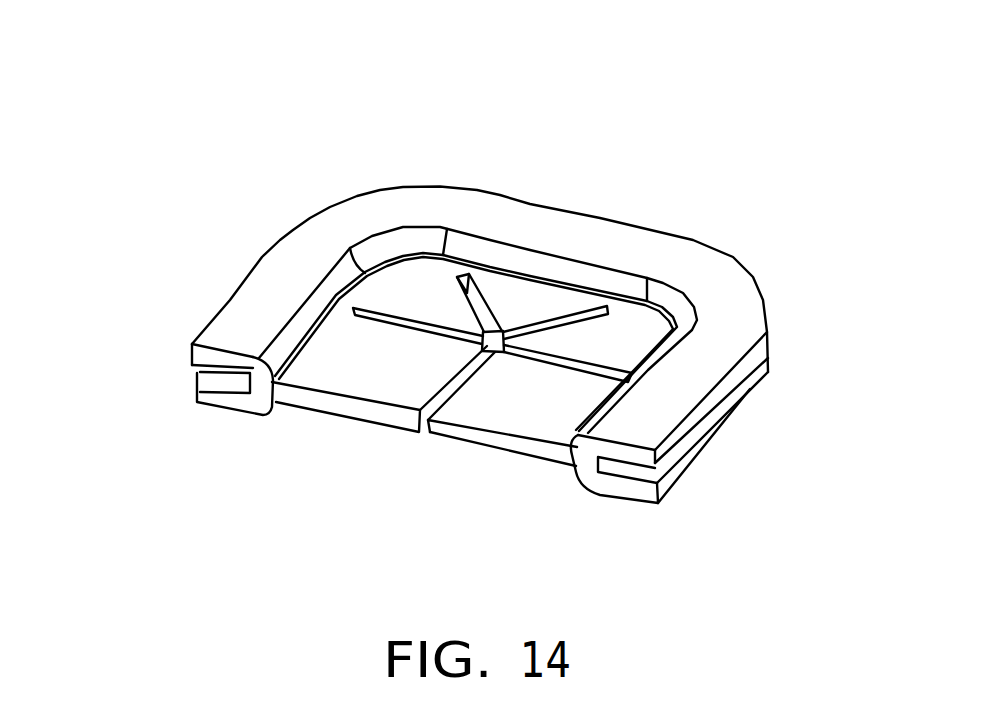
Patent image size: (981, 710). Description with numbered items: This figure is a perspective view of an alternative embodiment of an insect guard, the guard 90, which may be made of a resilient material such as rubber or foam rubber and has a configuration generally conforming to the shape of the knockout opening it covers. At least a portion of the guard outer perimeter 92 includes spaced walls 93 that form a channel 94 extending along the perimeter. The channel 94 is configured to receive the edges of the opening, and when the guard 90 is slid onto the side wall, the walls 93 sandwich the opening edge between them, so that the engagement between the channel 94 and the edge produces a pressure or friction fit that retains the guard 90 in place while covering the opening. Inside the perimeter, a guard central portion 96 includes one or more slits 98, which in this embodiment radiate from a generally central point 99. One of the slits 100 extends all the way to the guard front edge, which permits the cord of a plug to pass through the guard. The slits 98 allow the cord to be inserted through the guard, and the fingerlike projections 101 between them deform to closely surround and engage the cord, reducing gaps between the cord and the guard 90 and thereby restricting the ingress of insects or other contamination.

The guard 90 is at (237, 119).
The guard outer perimeter 92 is at (483, 250).
The spaced walls 93 is at (223, 357).
The channel 94 is at (501, 465).
The guard central portion 96 is at (376, 452).
The slits 98 is at (592, 252).
The central point 99 is at (422, 205).
The slit extending to guard front edge 100 is at (465, 455).
The fingerlike projections 101 is at (655, 272).